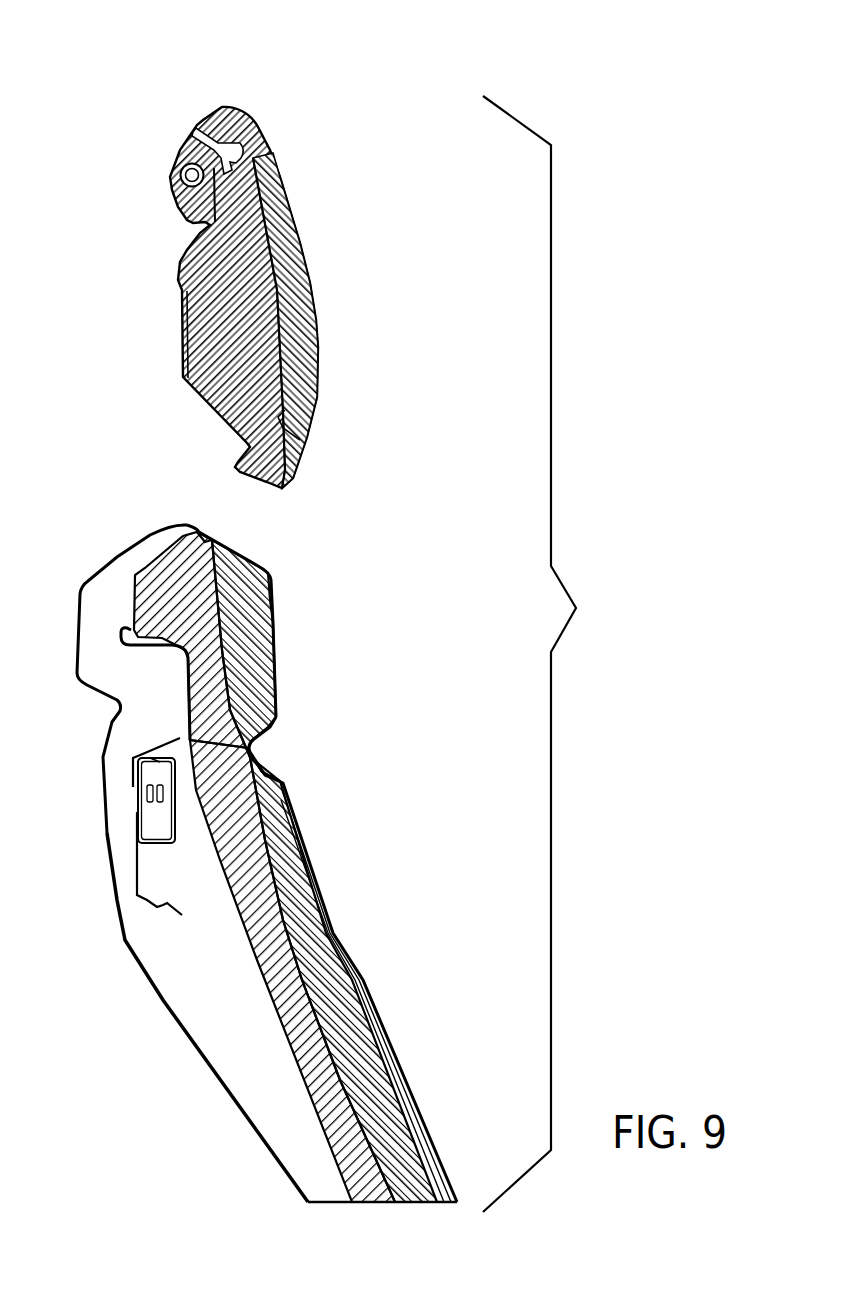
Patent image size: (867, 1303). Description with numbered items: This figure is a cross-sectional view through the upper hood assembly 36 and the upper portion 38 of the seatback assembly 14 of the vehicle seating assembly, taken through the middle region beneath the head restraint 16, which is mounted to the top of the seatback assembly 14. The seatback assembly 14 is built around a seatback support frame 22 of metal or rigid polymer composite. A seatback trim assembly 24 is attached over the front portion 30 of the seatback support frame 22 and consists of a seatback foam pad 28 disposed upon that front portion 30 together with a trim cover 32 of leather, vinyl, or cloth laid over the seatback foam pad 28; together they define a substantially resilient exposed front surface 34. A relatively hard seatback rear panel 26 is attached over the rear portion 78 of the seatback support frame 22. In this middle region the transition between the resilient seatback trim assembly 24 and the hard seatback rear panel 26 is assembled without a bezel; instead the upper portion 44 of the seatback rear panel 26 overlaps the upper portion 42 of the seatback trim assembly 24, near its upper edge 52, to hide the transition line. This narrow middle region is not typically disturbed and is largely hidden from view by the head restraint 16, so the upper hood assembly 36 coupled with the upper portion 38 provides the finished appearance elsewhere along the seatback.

The seatback assembly 14 is at (555, 654).
The head restraint 16 is at (300, 243).
The seatback support frame 22 is at (143, 823).
The seatback trim assembly 24 is at (330, 972).
The seatback rear panel 26 is at (163, 1000).
The seatback foam pad 28 is at (378, 1090).
The front portion 30 is at (252, 607).
The trim cover 32 is at (372, 1018).
The exposed front surface 34 is at (313, 870).
The upper hood assembly 36 is at (279, 269).
The upper portion 38 is at (238, 563).
The upper portion 42 is at (205, 546).
The upper portion 44 is at (152, 540).
The upper edge 52 is at (205, 542).
The rear portion 78 is at (140, 893).